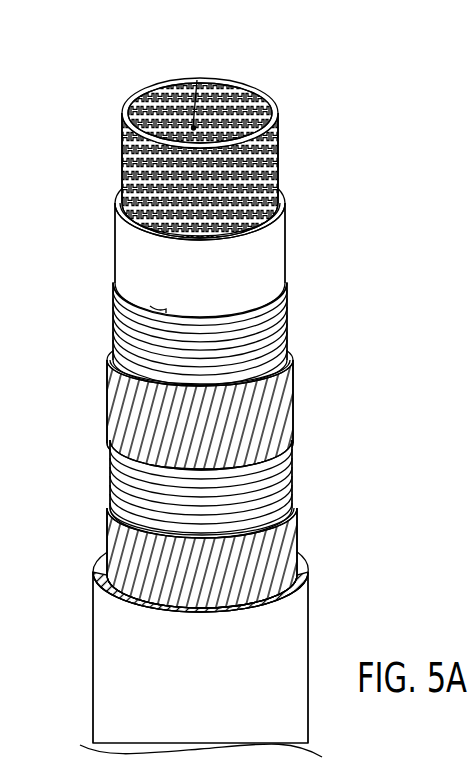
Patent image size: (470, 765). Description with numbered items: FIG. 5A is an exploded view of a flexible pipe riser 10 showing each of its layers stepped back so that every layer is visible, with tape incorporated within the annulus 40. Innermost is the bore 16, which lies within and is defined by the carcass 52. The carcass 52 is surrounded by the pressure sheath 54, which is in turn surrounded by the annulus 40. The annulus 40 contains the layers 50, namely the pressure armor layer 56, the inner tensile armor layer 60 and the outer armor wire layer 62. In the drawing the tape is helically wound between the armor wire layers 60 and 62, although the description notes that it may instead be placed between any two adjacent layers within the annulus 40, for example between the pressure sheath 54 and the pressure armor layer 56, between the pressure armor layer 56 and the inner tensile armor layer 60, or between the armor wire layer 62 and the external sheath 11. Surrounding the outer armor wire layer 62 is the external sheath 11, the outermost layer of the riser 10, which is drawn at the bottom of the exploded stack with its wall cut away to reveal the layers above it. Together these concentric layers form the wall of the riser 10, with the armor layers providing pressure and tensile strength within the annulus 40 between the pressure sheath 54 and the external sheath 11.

The flexible pipe riser 10 is at (54, 78).
The external sheath 11 is at (207, 680).
The bore 16 is at (230, 76).
The annulus 40 is at (199, 399).
The layers 50 is at (235, 410).
The carcass 52 is at (279, 158).
The pressure sheath 54 is at (279, 256).
The pressure armor layer 56 is at (285, 314).
The inner tensile armor layer 60 is at (292, 388).
The outer armor wire layer 62 is at (298, 528).